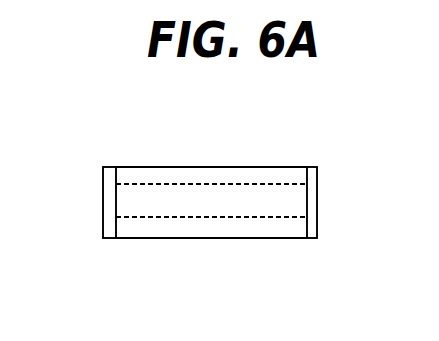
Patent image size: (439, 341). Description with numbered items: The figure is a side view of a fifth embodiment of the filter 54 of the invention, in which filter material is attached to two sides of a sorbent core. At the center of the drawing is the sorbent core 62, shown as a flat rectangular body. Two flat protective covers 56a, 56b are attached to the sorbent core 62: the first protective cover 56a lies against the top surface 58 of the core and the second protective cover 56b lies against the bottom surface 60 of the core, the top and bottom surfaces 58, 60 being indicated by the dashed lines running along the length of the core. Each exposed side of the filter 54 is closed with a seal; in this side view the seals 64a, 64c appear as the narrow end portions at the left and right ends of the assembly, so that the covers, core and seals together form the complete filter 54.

The filter 54 is at (206, 165).
The flat protective cover 56a is at (273, 133).
The flat protective cover 56b is at (274, 278).
The top surface 58 is at (165, 142).
The bottom surface 60 is at (163, 258).
The sorbent core 62 is at (267, 186).
The seal 64a is at (103, 188).
The seal 64c is at (370, 212).